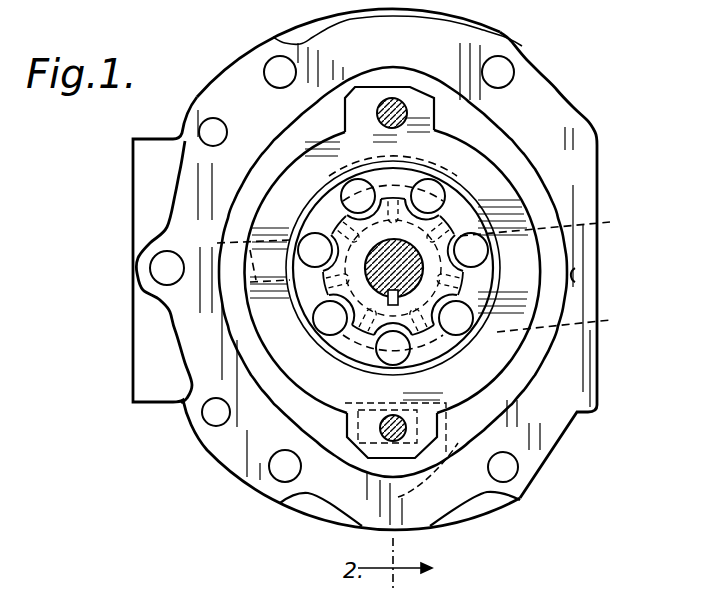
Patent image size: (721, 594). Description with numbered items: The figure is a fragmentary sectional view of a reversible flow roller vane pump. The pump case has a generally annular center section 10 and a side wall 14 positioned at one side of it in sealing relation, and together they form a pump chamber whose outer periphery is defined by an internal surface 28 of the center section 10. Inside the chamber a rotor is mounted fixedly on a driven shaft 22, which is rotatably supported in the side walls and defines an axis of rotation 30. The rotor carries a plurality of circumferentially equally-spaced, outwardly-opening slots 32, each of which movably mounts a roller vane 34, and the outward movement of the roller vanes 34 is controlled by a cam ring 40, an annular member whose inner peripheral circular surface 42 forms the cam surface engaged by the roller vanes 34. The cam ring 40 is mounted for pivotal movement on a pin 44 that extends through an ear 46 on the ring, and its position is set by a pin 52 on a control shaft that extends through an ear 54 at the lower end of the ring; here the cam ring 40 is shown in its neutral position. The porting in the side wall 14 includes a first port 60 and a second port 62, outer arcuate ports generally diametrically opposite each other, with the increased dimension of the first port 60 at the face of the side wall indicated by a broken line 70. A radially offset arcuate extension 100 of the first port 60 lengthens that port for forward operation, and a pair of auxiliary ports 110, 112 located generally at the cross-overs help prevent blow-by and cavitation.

The center section 10 is at (545, 417).
The side wall 14 is at (583, 430).
The driven shaft 22 is at (395, 240).
The internal surface 28 is at (574, 278).
The axis of rotation 30 is at (413, 257).
The slots 32 is at (327, 213).
The roller vanes 34 is at (317, 330).
The cam ring 40 is at (487, 200).
The inner peripheral circular surface 42 is at (314, 310).
The pin 44 is at (380, 107).
The ear 46 is at (418, 97).
The pin 52 is at (362, 487).
The ear 54 is at (425, 428).
The first port 60 is at (433, 370).
The second port 62 is at (403, 173).
The broken line 70 is at (362, 165).
The arcuate extension 100 is at (574, 326).
The auxiliary port 110 is at (228, 243).
The auxiliary port 112 is at (435, 248).